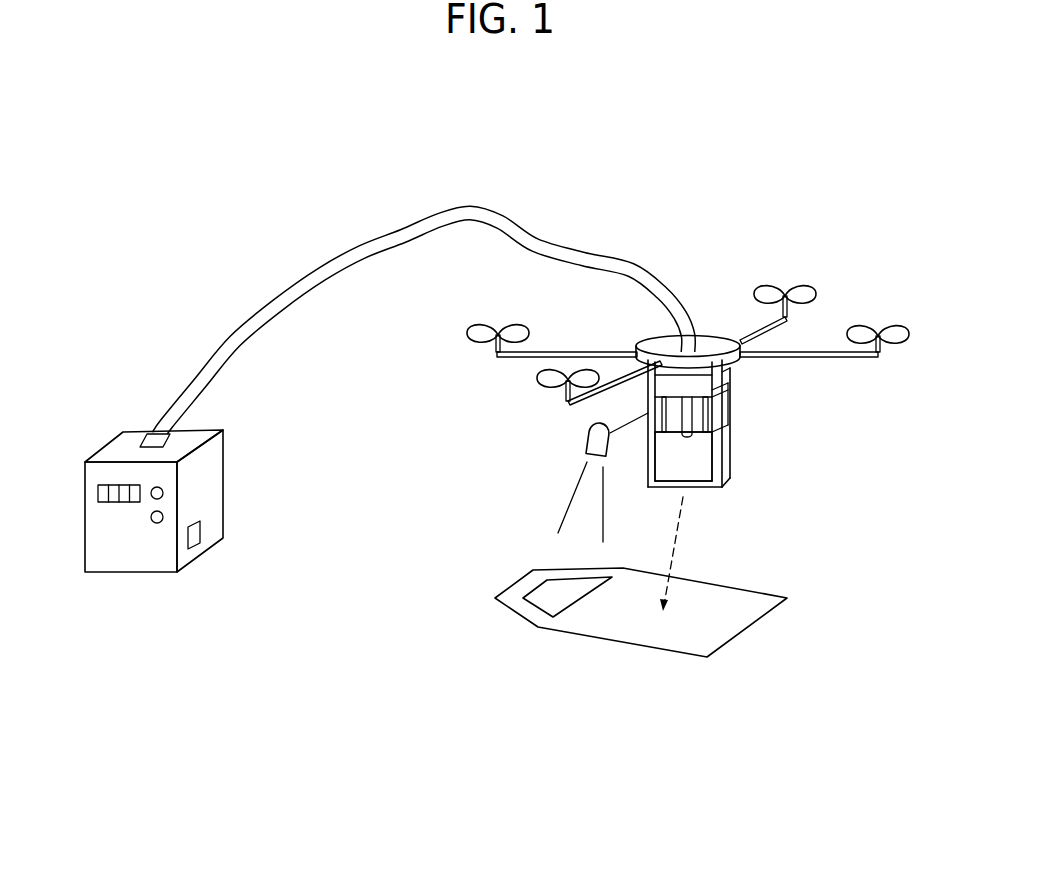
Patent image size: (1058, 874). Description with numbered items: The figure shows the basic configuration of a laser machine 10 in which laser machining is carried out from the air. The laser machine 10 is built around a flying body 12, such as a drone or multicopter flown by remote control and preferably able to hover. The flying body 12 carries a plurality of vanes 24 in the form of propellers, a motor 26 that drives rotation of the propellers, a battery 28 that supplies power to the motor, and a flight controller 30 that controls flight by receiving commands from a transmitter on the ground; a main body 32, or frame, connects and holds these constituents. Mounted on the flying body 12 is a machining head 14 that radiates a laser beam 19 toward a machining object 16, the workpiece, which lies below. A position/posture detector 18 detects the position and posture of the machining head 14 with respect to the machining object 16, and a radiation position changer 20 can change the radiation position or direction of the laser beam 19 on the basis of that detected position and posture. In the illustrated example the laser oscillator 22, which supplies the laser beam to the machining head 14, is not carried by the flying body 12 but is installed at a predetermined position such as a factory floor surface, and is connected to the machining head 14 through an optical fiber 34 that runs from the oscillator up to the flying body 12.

The laser machine 10 is at (145, 130).
The flying body 12 is at (845, 152).
The machining head 14 is at (751, 488).
The machining object 16 is at (617, 622).
The position/posture detector 18 is at (589, 442).
The laser beam 19 is at (677, 543).
The radiation position changer 20 is at (688, 473).
The laser oscillator 22 is at (117, 562).
The vanes 24 is at (897, 328).
The motor 26 is at (883, 348).
The battery 28 is at (756, 412).
The flight controller 30 is at (698, 385).
The main body 32 is at (727, 412).
The optical fiber 34 is at (318, 270).